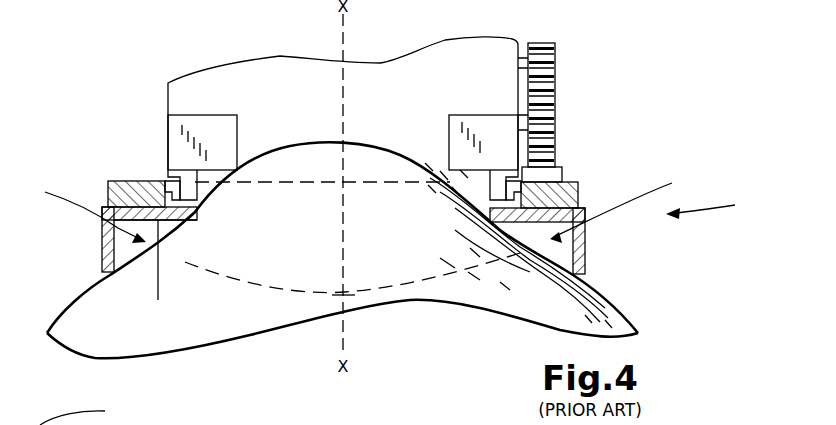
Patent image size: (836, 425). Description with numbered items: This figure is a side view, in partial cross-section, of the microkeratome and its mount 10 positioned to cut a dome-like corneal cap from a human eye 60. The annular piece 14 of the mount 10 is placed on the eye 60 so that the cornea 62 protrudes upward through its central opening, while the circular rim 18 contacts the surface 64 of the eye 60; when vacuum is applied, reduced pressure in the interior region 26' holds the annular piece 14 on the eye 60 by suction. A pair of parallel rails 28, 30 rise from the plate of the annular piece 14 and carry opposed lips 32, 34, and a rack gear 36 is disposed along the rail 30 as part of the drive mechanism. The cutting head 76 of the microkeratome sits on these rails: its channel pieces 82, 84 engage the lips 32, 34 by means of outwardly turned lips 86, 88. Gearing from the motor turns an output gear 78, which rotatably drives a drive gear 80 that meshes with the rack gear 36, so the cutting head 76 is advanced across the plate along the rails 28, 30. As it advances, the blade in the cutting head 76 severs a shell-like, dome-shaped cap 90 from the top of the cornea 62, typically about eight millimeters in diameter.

The mount 10 is at (718, 202).
The annular piece 14 is at (158, 300).
The circular rim 18 is at (101, 252).
The interior region 26' is at (359, 205).
The rail 28 is at (133, 192).
The rail 30 is at (574, 182).
The lip 32 is at (178, 183).
The lip 34 is at (487, 212).
The rack gear 36 is at (560, 170).
The eye 60 is at (196, 327).
The cornea 62 is at (383, 262).
The surface of eye 64 is at (598, 308).
The cutting head 76 is at (205, 80).
The output gear 78 is at (555, 52).
The drive gear 80 is at (555, 96).
The channel piece 82 is at (215, 125).
The channel piece 84 is at (484, 128).
The outwardly turned lip 86 is at (183, 216).
The outwardly turned lip 88 is at (497, 233).
The cap 90 is at (86, 413).